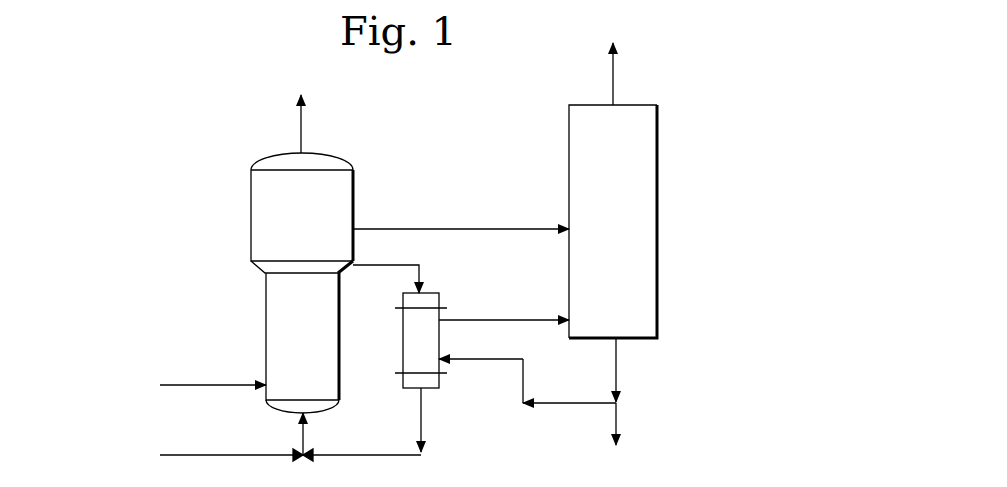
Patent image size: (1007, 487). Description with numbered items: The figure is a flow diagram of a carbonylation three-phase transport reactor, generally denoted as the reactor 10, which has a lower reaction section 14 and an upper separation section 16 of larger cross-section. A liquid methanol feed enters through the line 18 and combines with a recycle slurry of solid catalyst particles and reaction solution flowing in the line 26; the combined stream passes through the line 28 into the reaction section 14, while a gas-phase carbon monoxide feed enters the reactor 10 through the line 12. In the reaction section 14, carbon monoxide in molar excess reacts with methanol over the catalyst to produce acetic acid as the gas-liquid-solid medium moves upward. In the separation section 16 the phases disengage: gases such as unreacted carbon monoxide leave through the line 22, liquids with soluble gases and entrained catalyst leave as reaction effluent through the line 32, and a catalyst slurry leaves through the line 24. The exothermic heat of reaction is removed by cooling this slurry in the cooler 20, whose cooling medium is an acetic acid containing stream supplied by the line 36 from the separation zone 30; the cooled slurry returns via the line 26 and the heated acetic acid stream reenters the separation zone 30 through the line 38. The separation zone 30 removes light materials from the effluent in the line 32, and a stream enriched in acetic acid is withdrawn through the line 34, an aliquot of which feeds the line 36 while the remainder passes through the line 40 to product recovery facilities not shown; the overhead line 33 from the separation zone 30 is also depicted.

The carbonylation 3PTR (reactor) 10 is at (226, 192).
The line 12 is at (224, 380).
The reaction section 14 is at (320, 340).
The separation section 16 is at (318, 234).
The line 18 is at (224, 452).
The cooler 20 is at (403, 350).
The line 22 is at (302, 124).
The line 24 is at (420, 275).
The line 26 is at (422, 422).
The line 28 is at (305, 438).
The separation zone 30 is at (596, 228).
The line 32 is at (472, 227).
The separator overhead line 33 is at (614, 72).
The line 34 is at (617, 362).
The line 36 is at (541, 403).
The line 38 is at (492, 319).
The line 40 is at (617, 415).